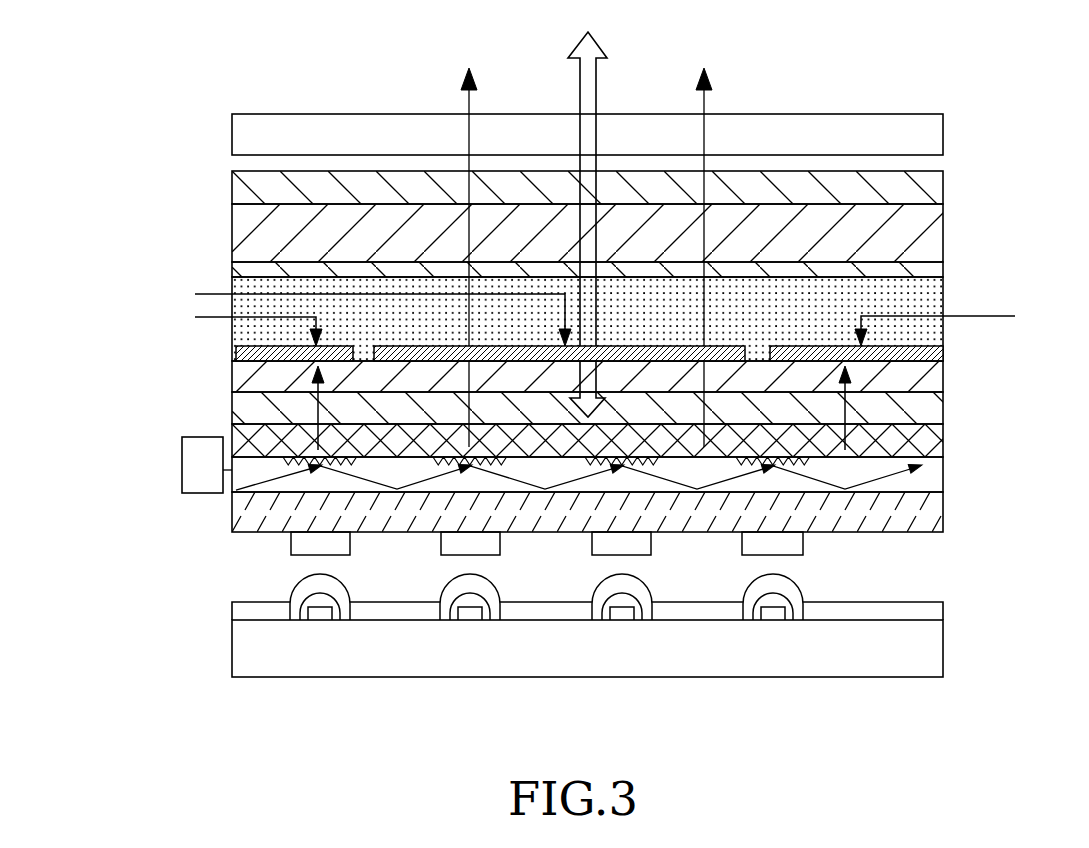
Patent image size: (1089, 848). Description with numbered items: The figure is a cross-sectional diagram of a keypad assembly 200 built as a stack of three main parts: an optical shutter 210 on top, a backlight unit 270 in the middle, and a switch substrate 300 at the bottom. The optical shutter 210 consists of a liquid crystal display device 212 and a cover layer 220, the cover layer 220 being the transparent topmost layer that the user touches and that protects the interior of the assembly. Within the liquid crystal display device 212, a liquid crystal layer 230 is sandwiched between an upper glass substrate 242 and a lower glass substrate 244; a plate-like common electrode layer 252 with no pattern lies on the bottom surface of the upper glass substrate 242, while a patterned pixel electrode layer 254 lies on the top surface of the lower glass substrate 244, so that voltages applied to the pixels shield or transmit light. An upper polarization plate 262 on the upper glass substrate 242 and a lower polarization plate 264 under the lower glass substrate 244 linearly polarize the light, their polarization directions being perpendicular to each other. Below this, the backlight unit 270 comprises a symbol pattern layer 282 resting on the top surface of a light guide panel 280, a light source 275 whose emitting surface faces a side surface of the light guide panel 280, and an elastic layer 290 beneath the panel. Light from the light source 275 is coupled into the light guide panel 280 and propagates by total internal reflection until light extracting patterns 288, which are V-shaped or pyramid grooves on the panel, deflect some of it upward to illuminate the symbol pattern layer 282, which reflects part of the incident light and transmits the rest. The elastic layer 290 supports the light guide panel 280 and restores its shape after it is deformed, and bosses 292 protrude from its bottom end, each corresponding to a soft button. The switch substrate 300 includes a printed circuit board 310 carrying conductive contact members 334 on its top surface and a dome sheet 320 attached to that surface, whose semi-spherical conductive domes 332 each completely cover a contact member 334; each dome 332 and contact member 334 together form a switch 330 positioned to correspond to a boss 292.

The keypad assembly 200 is at (577, 375).
The optical shutter 210 is at (577, 269).
The liquid crystal display device 212 is at (955, 224).
The cover layer 220 is at (240, 133).
The upper polarization plate 262 is at (240, 188).
The upper glass substrate 242 is at (240, 231).
The common electrode layer 252 is at (240, 268).
The liquid crystal layer 230 is at (240, 331).
The pixel electrode layer 254 is at (225, 354).
The lower glass substrate 244 is at (240, 380).
The lower polarization plate 264 is at (240, 406).
The backlight unit 270 is at (551, 476).
The symbol pattern layer 282 is at (240, 430).
The light guide panel 280 is at (290, 461).
The light source 275 is at (182, 464).
The light extracting patterns 288 is at (233, 494).
The elastic layer 290 is at (549, 499).
The bosses 292 is at (291, 543).
The switch substrate 300 is at (563, 641).
The printed circuit board 310 is at (528, 655).
The dome sheet 320 is at (218, 636).
The switch 330 is at (541, 640).
The dome 332 is at (301, 598).
The contact member 334 is at (322, 622).